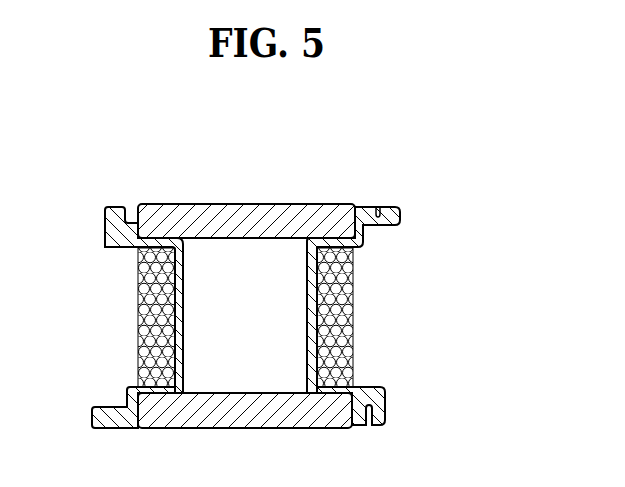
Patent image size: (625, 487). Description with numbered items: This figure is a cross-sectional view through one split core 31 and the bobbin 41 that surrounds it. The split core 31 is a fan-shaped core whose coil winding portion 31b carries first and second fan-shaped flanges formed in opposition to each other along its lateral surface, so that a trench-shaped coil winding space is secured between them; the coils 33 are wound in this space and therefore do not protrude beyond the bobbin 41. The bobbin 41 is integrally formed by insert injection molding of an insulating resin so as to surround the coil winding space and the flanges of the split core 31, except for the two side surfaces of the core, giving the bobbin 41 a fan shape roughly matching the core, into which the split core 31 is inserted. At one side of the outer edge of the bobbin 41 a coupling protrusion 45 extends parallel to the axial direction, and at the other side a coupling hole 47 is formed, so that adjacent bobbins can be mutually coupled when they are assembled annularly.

The split core 31 is at (282, 207).
The coil winding portion 31b is at (235, 262).
The coils 33 is at (345, 295).
The bobbin 41 is at (383, 387).
The coupling protrusion 45 is at (102, 212).
The coupling hole 47 is at (377, 207).